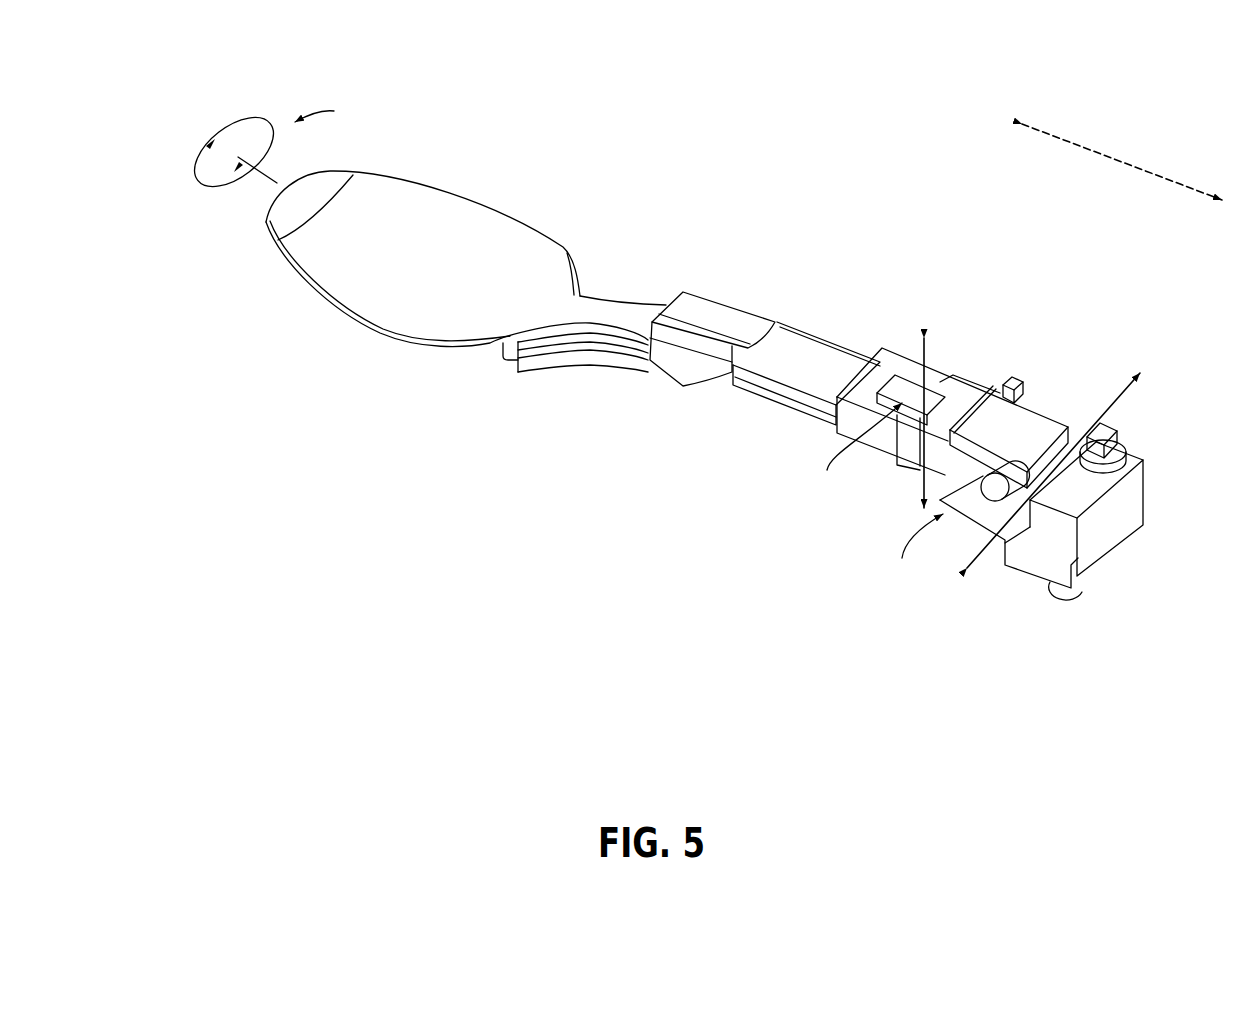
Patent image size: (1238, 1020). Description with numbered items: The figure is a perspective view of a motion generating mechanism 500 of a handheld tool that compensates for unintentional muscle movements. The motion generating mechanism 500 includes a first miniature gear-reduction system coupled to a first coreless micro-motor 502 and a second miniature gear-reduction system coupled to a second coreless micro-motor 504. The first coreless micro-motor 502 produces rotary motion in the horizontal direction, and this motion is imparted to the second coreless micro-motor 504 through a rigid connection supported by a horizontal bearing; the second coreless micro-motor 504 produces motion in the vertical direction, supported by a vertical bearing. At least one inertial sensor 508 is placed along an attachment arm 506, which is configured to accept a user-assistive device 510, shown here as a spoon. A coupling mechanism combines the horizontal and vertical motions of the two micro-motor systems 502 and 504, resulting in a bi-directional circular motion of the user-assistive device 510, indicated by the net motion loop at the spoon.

The motion generating mechanism 500 is at (816, 659).
The first coreless micro-motor 502 is at (1114, 564).
The second coreless micro-motor 504 is at (1049, 400).
The attachment arm 506 is at (718, 410).
The inertial sensor 508 is at (618, 384).
The user-assistive device 510 is at (353, 340).